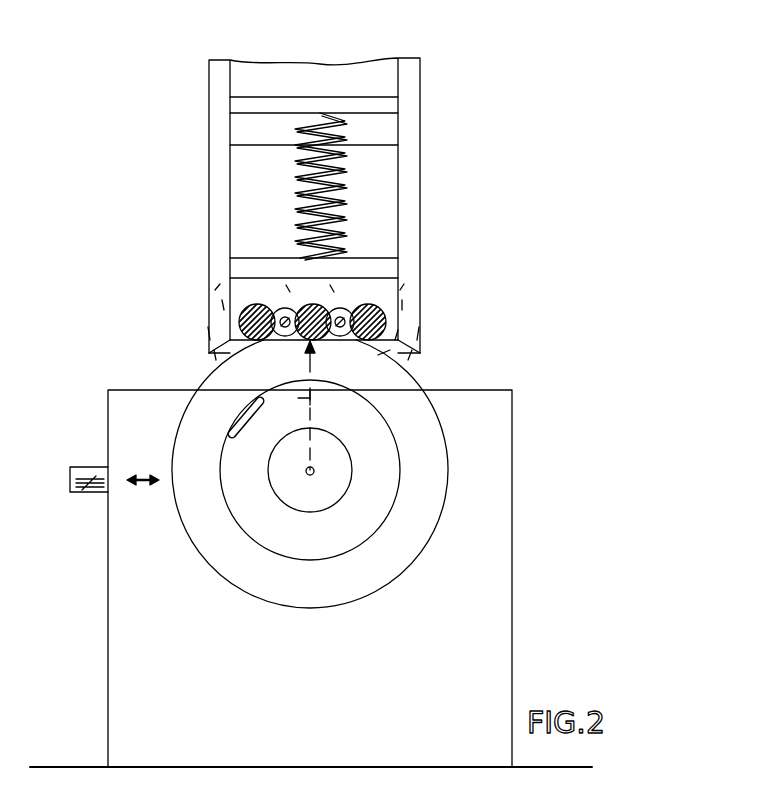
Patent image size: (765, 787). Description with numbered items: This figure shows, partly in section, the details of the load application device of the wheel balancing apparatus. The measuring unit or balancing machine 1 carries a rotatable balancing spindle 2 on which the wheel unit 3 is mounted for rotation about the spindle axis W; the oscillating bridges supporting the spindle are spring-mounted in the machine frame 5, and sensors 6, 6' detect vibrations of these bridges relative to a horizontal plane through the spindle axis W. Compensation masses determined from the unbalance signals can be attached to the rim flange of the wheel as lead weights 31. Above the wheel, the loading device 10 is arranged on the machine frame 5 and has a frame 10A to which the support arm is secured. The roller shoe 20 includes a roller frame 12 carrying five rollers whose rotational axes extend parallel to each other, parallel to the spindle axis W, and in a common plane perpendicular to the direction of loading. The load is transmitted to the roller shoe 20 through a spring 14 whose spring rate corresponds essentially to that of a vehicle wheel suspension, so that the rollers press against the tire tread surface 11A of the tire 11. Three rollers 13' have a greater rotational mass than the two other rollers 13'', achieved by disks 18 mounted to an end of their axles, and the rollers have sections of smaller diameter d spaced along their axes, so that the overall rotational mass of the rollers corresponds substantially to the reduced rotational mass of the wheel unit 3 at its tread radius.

The loading device 10 is at (437, 49).
The frame of the loading mechanism 10A is at (410, 104).
The roller frame 12 is at (271, 252).
The roller shoe 20 is at (250, 290).
The spring 14 is at (343, 168).
The rollers 13' is at (315, 285).
The rollers 13'' is at (341, 323).
The disks 18 is at (412, 345).
The tire tread surface 11A is at (412, 370).
The tire 11 is at (420, 413).
The wheel unit 3 is at (352, 532).
The balancing spindle 2 is at (340, 488).
The spindle axis W is at (316, 467).
The radius R is at (299, 429).
The smaller diameter d is at (291, 404).
The lead weights 31 is at (231, 437).
The balancing machine 1 is at (485, 642).
The machine frame 5 is at (122, 462).
The sensor 6 is at (72, 506).
The sensor 6' is at (72, 506).